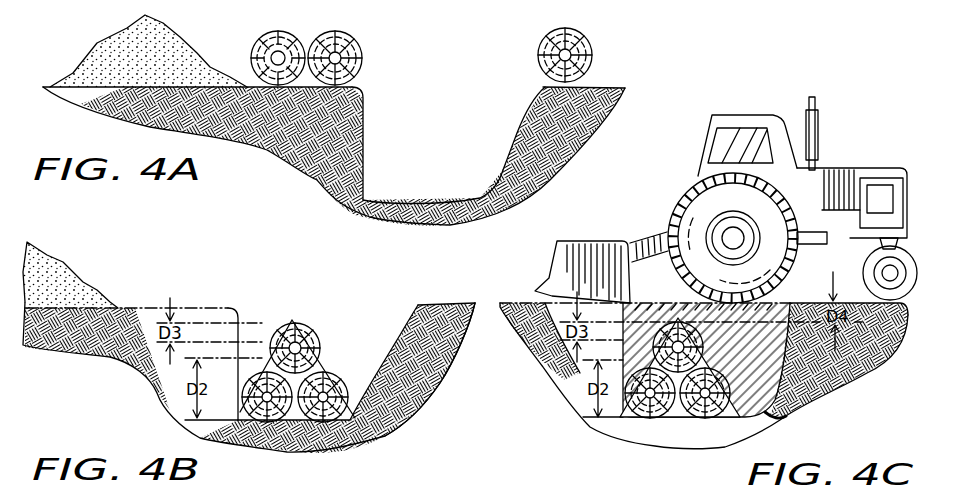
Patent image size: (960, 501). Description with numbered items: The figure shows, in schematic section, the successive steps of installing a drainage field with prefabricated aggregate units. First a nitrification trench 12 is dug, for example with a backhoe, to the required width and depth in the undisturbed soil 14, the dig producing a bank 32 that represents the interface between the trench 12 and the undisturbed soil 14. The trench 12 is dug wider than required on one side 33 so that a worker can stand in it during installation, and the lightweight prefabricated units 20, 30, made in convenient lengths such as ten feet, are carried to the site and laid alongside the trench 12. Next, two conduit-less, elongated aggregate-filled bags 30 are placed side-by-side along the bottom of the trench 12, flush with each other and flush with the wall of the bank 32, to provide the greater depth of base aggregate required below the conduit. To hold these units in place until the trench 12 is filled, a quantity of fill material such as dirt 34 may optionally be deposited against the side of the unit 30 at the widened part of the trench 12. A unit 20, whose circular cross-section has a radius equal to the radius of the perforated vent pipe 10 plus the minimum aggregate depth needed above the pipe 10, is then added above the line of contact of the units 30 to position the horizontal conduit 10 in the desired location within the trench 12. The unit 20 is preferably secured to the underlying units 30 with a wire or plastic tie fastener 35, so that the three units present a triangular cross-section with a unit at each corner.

In FIG. 4A, the perforated vent pipe 10 is at (278, 44).
In FIG. 4B, the perforated vent pipe 10 is at (306, 337).
In FIG. 4C, the perforated vent pipe 10 is at (680, 365).
In FIG. 4A, the nitrification trench 12 is at (433, 178).
In FIG. 4B, the nitrification trench 12 is at (330, 435).
In FIG. 4C, the nitrification trench 12 is at (717, 369).
In FIG. 4A, the undisturbed soil 14 is at (228, 96).
In FIG. 4B, the undisturbed soil 14 is at (218, 298).
In FIG. 4C, the undisturbed soil 14 is at (848, 296).
In FIG. 4A, the prefabricated unit 20 is at (274, 44).
In FIG. 4B, the prefabricated unit 20 is at (295, 329).
In FIG. 4C, the prefabricated unit 20 is at (678, 325).
In FIG. 4A, the conduit-less aggregate-filled bag 30 is at (467, 44).
In FIG. 4B, the conduit-less aggregate-filled bag 30 is at (297, 399).
In FIG. 4C, the conduit-less aggregate-filled bag 30 is at (677, 419).
In FIG. 4A, the bank 32 is at (382, 143).
In FIG. 4B, the bank 32 is at (249, 353).
In FIG. 4A, the widened side of trench 33 is at (511, 128).
In FIG. 4B, the widened side of trench 33 is at (384, 362).
In FIG. 4B, the fill material (dirt) 34 is at (430, 369).
In FIG. 4B, the tie fastener 35 is at (306, 364).